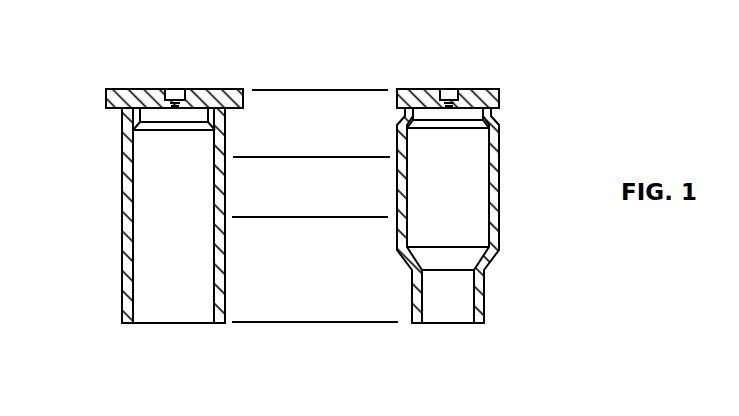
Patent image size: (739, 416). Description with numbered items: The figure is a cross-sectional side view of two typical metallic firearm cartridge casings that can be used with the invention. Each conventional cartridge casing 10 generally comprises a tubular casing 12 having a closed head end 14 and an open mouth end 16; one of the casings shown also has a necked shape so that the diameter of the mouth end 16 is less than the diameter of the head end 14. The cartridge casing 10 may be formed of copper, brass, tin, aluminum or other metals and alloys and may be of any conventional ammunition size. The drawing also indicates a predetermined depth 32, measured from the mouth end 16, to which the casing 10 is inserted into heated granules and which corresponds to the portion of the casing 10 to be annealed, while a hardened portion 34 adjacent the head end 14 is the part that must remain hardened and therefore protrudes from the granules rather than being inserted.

The cartridge casing 10 is at (104, 68).
The tubular casing 12 is at (122, 181).
The head end 14 is at (190, 90).
The mouth end 16 is at (430, 324).
The predetermined depth 32 is at (313, 218).
The hardened portion 34 is at (311, 91).